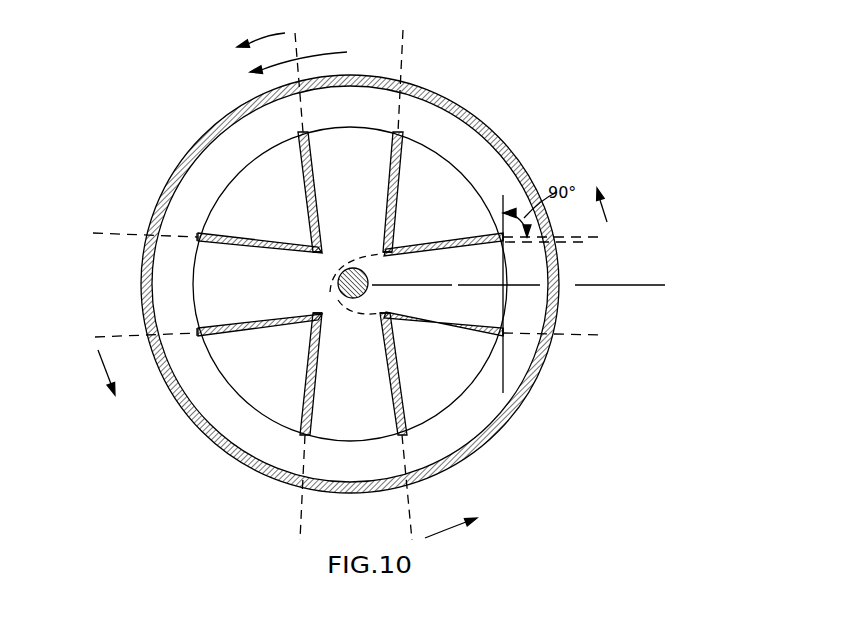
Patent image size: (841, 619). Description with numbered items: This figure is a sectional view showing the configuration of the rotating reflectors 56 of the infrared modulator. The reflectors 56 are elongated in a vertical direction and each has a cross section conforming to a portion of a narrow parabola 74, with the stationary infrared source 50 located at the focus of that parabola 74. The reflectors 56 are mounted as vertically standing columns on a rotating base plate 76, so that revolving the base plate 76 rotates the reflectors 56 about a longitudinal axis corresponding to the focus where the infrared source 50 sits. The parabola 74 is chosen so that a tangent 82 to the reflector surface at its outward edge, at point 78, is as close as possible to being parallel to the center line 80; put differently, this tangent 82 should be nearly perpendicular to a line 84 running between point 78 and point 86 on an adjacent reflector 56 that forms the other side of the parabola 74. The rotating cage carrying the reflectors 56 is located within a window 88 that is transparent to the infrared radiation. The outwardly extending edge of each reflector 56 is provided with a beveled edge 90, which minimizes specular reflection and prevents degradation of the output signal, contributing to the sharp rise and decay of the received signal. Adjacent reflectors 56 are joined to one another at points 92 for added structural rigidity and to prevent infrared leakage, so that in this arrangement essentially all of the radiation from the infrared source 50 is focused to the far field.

The stationary infrared source 50 is at (368, 275).
The reflectors 56 is at (392, 188).
The parabola 74 is at (343, 292).
The base plate 76 is at (428, 173).
The point 78 is at (503, 239).
The center line 80 is at (583, 284).
The tangent 82 is at (577, 238).
The line 84 is at (503, 293).
The point 86 is at (505, 334).
The window 88 is at (508, 142).
The beveled edge 90 is at (197, 330).
The points 92 is at (382, 250).